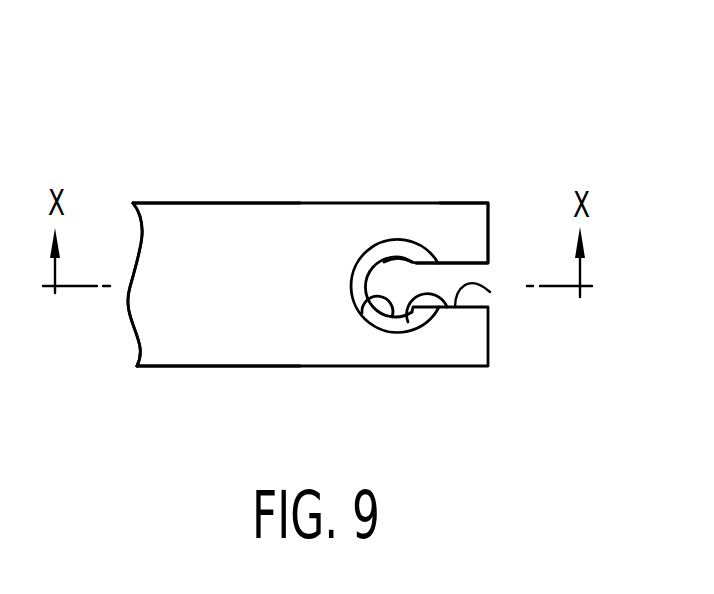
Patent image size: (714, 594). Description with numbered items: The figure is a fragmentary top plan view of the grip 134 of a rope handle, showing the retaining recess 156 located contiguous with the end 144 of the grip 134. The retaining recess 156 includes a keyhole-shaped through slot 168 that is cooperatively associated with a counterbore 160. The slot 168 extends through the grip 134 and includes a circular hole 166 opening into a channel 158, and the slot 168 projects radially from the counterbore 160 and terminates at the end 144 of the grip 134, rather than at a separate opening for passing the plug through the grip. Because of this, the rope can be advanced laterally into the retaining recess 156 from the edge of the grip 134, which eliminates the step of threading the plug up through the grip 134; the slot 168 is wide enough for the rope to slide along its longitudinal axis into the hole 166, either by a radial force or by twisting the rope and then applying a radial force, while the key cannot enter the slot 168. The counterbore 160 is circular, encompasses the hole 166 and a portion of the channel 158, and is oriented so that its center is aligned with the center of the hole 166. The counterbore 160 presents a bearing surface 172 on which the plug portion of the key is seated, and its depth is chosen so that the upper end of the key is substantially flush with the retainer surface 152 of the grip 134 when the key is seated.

The grip 134 is at (155, 140).
The retainer surface 152 is at (238, 288).
The end 144 is at (490, 233).
The bearing surface 172 is at (353, 283).
The counterbore 160 is at (373, 242).
The retaining recess 156 is at (398, 252).
The circular hole 166 is at (363, 308).
The channel 158 is at (401, 314).
The keyhole-shaped through slot 168 is at (490, 292).